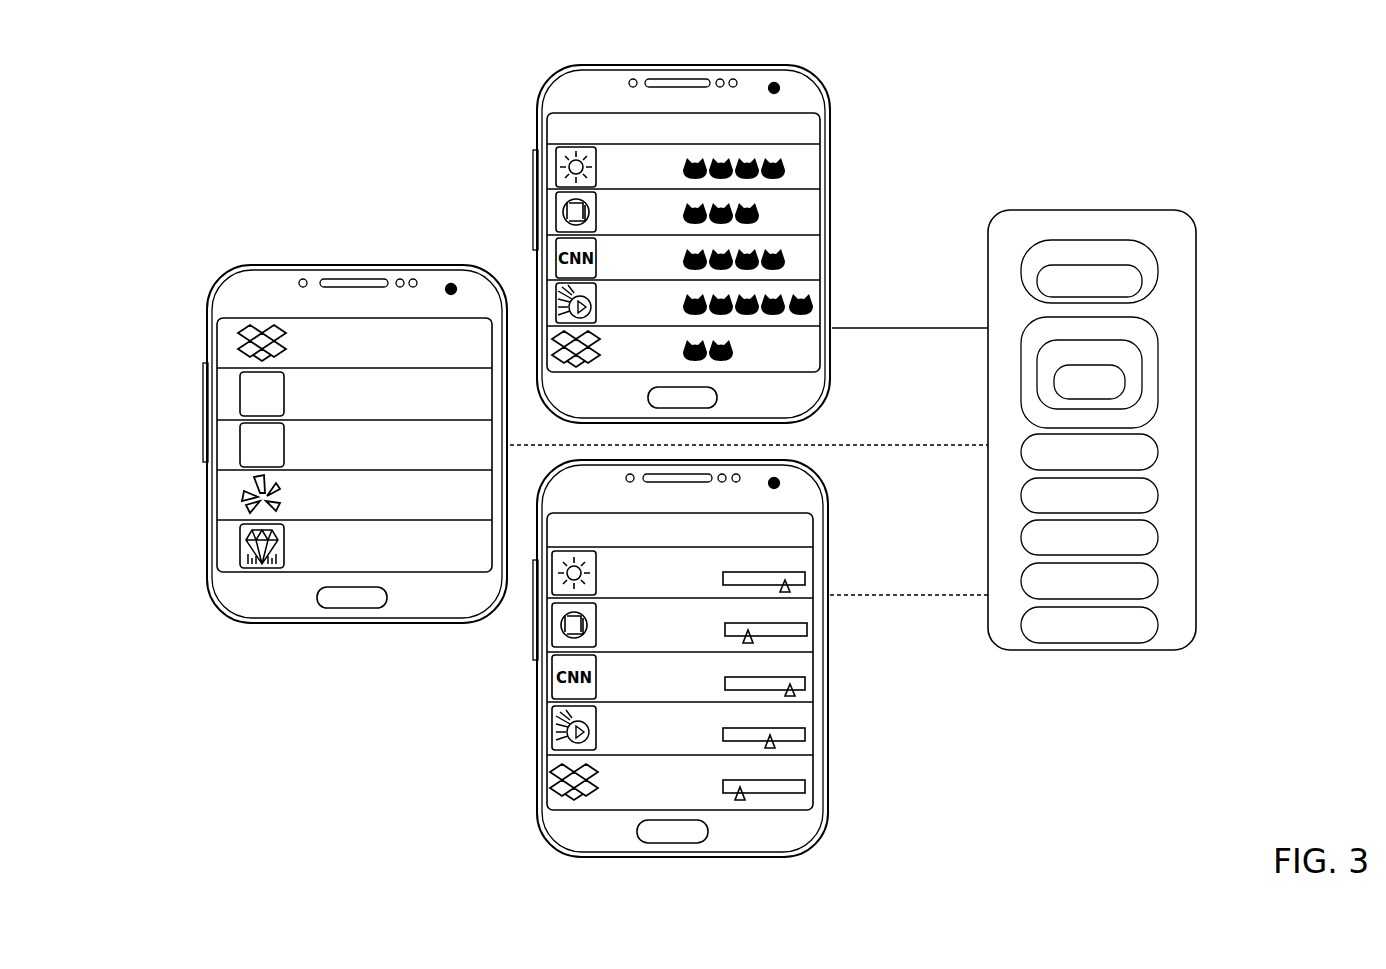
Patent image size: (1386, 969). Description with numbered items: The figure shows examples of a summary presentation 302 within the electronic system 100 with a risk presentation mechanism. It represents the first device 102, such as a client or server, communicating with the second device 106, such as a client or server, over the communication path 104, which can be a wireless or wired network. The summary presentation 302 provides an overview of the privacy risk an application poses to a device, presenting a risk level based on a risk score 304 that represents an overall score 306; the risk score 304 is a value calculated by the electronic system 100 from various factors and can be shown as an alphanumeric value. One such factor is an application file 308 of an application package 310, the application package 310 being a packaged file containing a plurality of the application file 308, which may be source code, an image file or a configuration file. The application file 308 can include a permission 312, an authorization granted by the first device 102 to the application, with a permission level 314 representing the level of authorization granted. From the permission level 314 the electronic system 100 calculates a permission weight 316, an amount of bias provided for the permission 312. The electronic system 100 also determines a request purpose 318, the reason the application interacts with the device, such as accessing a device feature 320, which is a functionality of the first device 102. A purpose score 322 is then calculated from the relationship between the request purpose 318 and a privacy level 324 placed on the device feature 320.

The electronic system 100 is at (283, 92).
The first device 102 is at (295, 265).
The device feature 320 is at (451, 279).
The summary presentation 302 is at (805, 140).
The communication path 104 is at (845, 328).
The second device 106 is at (1123, 211).
The risk score 304 is at (1089, 271).
The overall score 306 is at (1089, 281).
The application package 310 is at (1089, 372).
The application file 308 is at (1089, 374).
The permission 312 is at (1089, 382).
The permission level 314 is at (1089, 452).
The permission weight 316 is at (1089, 495).
The request purpose 318 is at (1089, 537).
The purpose score 322 is at (1089, 581).
The privacy level 324 is at (1089, 625).